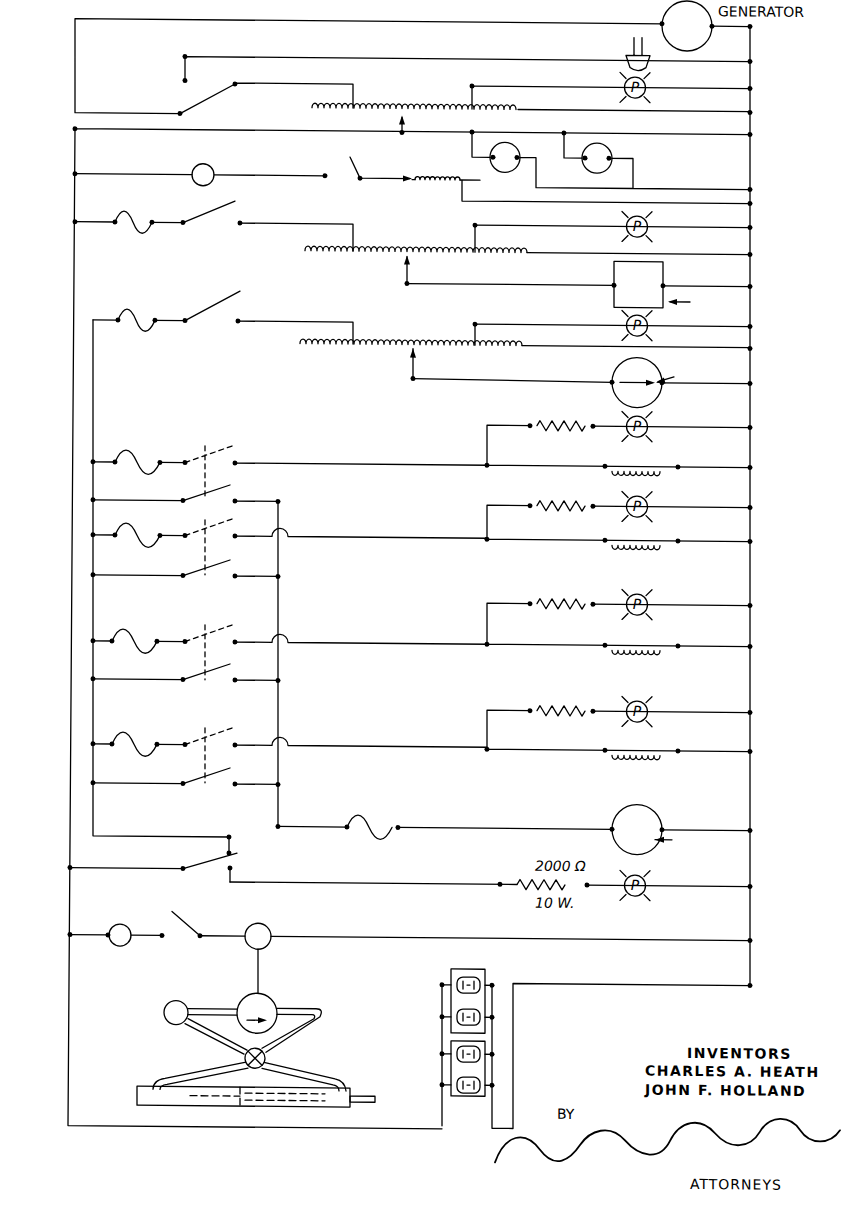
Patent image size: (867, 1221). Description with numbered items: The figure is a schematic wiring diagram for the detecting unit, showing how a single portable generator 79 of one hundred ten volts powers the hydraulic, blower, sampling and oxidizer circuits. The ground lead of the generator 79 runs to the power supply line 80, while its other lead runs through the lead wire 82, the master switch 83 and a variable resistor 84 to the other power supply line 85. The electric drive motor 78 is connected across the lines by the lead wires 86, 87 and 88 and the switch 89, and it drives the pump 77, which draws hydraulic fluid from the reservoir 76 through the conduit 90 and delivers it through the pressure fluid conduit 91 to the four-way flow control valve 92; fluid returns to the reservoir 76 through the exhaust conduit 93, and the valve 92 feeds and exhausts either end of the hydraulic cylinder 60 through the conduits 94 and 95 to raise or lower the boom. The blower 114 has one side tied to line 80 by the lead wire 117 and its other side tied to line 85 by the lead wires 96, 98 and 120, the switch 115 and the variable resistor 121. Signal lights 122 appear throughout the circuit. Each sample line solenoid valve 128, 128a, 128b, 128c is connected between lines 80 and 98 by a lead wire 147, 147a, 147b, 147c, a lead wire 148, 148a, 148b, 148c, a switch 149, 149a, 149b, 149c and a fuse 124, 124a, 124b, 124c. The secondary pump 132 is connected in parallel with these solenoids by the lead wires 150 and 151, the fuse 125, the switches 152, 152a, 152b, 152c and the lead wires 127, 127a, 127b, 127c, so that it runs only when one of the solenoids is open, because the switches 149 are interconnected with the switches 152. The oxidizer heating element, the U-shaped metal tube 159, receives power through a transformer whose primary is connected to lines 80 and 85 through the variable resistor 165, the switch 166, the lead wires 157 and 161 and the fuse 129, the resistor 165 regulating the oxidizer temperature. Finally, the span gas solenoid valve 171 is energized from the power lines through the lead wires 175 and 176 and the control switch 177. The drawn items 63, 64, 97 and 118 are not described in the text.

The hydraulic cylinder 60 is at (352, 1083).
The base passage 63 is at (253, 1097).
The outlet nipple 64 is at (372, 1099).
The reservoir 76 is at (163, 1010).
The pump 77 is at (270, 998).
The electric drive motor 78 is at (271, 926).
The generator 79 is at (706, 31).
The power supply line 80 is at (752, 157).
The lead wire 82 is at (73, 73).
The master switch 83 is at (212, 96).
The variable resistor 84 is at (333, 109).
The power supply line 85 is at (73, 205).
The lead wire 86 is at (417, 930).
The lead wire 87 is at (246, 924).
The lead wire 88 is at (92, 932).
The switch 89 is at (190, 920).
The conduit 90 is at (222, 1006).
The pressure fluid conduit 91 is at (323, 1023).
The four-way flow control valve 92 is at (270, 1058).
The exhaust conduit 93 is at (200, 1032).
The conduit 94 is at (338, 1076).
The conduit 95 is at (193, 1067).
The lead wire 96 is at (120, 872).
The switch 97 is at (205, 872).
The lead wire 98 is at (93, 393).
The blower 114 is at (665, 393).
The switch 115 is at (212, 298).
The lead wire 117 is at (752, 385).
The blower supply line 118 is at (510, 376).
The lead wire 120 is at (276, 322).
The variable resistor 121 is at (392, 355).
The signal light 122 is at (650, 85).
The fuse 124 is at (140, 455).
The fuse 124a is at (140, 529).
The fuse 124b is at (138, 635).
The fuse 124c is at (138, 740).
The fuse 125 is at (395, 835).
The lead wire 127 is at (100, 499).
The lead wire 127a is at (100, 574).
The lead wire 127b is at (102, 678).
The lead wire 127c is at (102, 782).
The solenoid valve 128 is at (664, 469).
The solenoid valve 128a is at (658, 547).
The solenoid valve 128b is at (660, 648).
The solenoid valve 128c is at (640, 757).
The fuse 129 is at (140, 240).
The secondary pump 132 is at (662, 845).
The lead wire 147 is at (751, 458).
The lead wire 147a is at (758, 537).
The lead wire 147b is at (698, 637).
The lead wire 147c is at (701, 743).
The lead wire 148 is at (360, 479).
The lead wire 148a is at (360, 550).
The lead wire 148b is at (360, 653).
The lead wire 148c is at (360, 757).
The switch 149 is at (213, 446).
The switch 149a is at (219, 519).
The switch 149b is at (221, 621).
The switch 149c is at (215, 734).
The lead wire 150 is at (707, 825).
The lead wire 151 is at (548, 821).
The switch 152 is at (228, 485).
The switch 152a is at (218, 557).
The switch 152b is at (218, 665).
The switch 152c is at (218, 768).
The lead wire 157 is at (268, 226).
The U-shaped metal tube 159 is at (610, 296).
The lead wire 161 is at (723, 281).
The variable resistor 165 is at (382, 262).
The switch 166 is at (212, 210).
The solenoid valve 171 is at (438, 170).
The lead wire 175 is at (556, 202).
The lead wire 176 is at (278, 182).
The control switch 177 is at (352, 157).